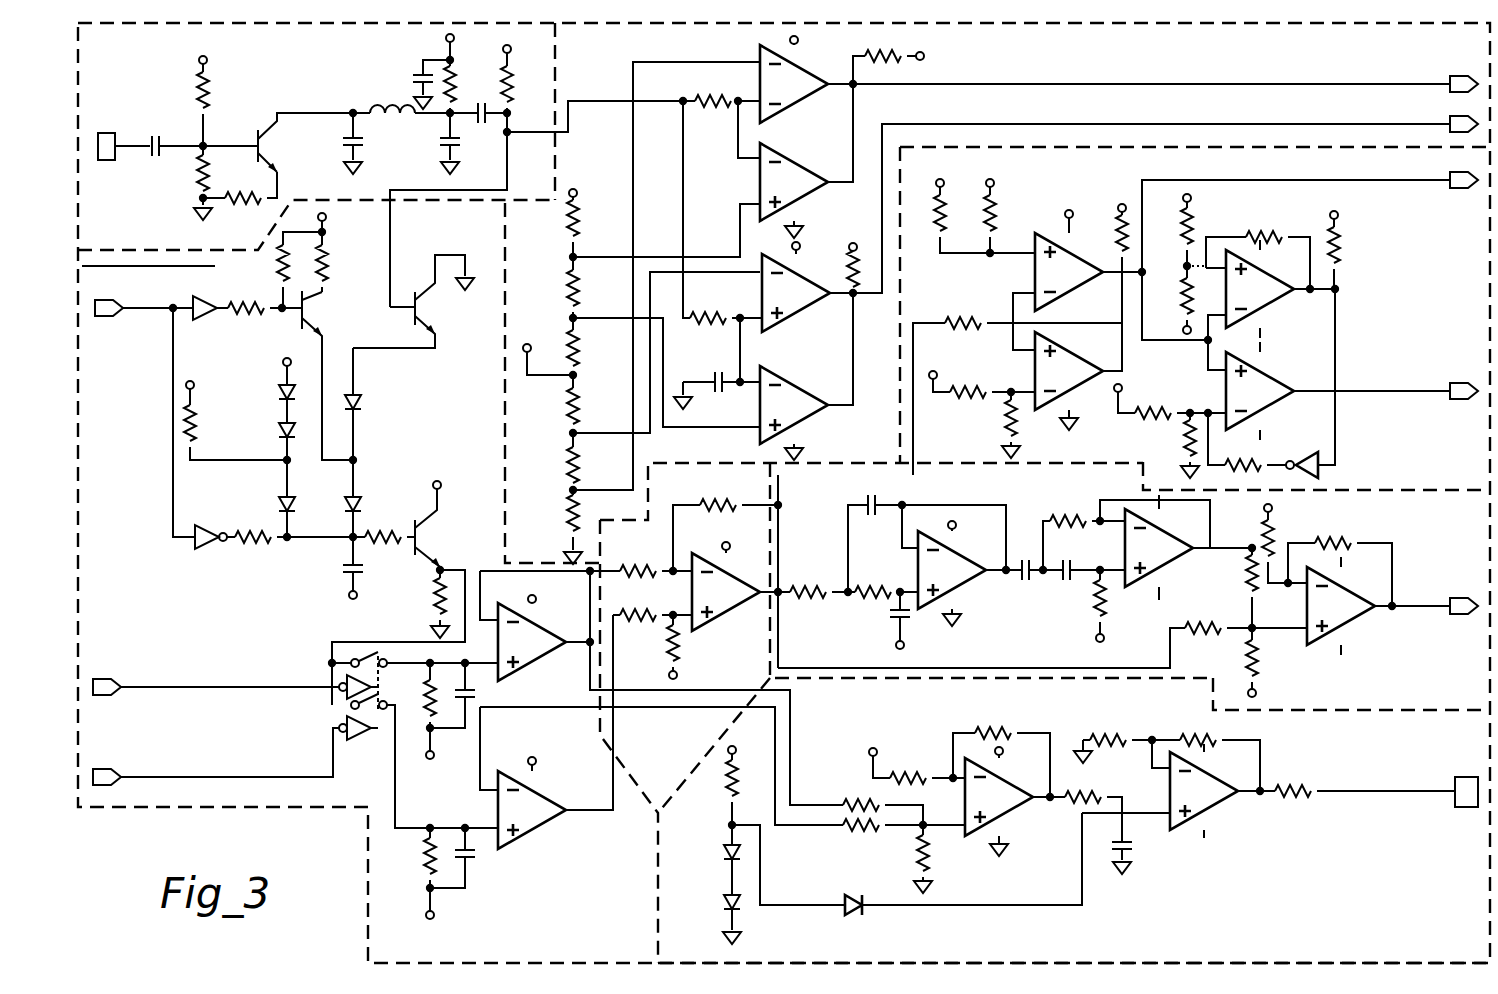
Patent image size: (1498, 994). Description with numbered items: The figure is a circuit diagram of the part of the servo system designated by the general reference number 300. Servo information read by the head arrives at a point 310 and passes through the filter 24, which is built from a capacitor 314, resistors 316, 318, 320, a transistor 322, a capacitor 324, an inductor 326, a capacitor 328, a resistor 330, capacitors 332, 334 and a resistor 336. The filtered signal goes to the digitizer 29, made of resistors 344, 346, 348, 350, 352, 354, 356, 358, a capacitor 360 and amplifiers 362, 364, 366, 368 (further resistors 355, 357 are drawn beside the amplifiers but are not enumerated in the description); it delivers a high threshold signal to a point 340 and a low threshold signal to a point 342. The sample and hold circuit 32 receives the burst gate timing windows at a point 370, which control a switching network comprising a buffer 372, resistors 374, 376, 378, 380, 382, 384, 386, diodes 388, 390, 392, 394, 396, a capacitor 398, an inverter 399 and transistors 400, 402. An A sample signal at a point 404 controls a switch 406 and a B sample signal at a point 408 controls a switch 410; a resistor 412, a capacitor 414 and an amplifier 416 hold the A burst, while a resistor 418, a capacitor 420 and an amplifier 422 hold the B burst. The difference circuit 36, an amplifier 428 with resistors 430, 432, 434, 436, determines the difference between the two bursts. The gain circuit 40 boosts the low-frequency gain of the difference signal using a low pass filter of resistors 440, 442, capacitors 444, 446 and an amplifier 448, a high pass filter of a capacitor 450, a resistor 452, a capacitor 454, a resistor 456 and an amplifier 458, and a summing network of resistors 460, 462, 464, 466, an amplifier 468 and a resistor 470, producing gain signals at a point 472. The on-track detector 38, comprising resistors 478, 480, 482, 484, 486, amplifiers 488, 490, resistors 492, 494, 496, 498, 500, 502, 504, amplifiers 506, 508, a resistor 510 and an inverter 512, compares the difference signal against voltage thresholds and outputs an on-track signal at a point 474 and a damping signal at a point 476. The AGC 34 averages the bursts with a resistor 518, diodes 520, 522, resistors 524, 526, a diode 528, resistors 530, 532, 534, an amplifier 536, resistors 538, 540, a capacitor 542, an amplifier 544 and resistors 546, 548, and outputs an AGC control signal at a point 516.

The filter 24 is at (154, 76).
The digitizer 29 is at (610, 73).
The sample and hold circuit 32 is at (477, 426).
The AGC 34 is at (1370, 886).
The difference circuit 36 is at (692, 493).
The on-track detector 38 is at (1442, 306).
The gain circuit 40 is at (1462, 556).
The general reference number 300 is at (187, 815).
The point 310 is at (118, 134).
The capacitor 314 is at (198, 132).
The resistor 316 is at (213, 86).
The resistor 318 is at (177, 183).
The resistor 320 is at (240, 183).
The transistor 322 is at (305, 142).
The capacitor 324 is at (372, 143).
The inductor 326 is at (401, 96).
The capacitor 328 is at (410, 75).
The resistor 330 is at (451, 73).
The capacitor 332 is at (452, 125).
The capacitor 334 is at (471, 142).
The resistor 336 is at (536, 165).
The point 340 is at (1368, 67).
The point 342 is at (1375, 113).
The resistor 344 is at (658, 214).
The resistor 346 is at (663, 342).
The resistor 348 is at (563, 353).
The resistor 350 is at (663, 359).
The resistor 352 is at (663, 278).
The resistor 354 is at (550, 529).
The pull-up resistor 355 is at (870, 276).
The resistor 356 is at (720, 114).
The pull-up resistor 357 is at (903, 56).
The resistor 358 is at (722, 243).
The capacitor 360 is at (707, 378).
The amplifier 362 is at (1105, 79).
The amplifier 364 is at (806, 161).
The amplifier 366 is at (1106, 231).
The amplifier 368 is at (809, 376).
The point 370 is at (140, 320).
The buffer 372 is at (203, 325).
The resistor 374 is at (203, 410).
The resistor 376 is at (297, 554).
The resistor 378 is at (295, 257).
The resistor 380 is at (339, 346).
The resistor 382 is at (390, 521).
The resistor 384 is at (415, 603).
The resistor 386 is at (265, 322).
The diode 388 is at (266, 381).
The diode 390 is at (260, 460).
The diode 392 is at (262, 514).
The diode 394 is at (332, 498).
The diode 396 is at (376, 406).
The capacitor 398 is at (331, 582).
The inverter 399 is at (186, 443).
The transistor 400 is at (413, 301).
The transistor 402 is at (407, 561).
The point 404 is at (214, 674).
The switch 406 is at (329, 696).
The point 408 is at (214, 756).
The switch 410 is at (359, 744).
The resistor 412 is at (414, 742).
The capacitor 414 is at (478, 695).
The amplifier 416 is at (537, 626).
The resistor 418 is at (412, 886).
The capacitor 420 is at (477, 858).
The amplifier 422 is at (546, 732).
The amplifier 428 is at (736, 604).
The resistor 430 is at (649, 647).
The resistor 432 is at (652, 602).
The resistor 434 is at (640, 589).
The resistor 436 is at (727, 521).
The resistor 440 is at (822, 578).
The resistor 442 is at (885, 578).
The capacitor 444 is at (927, 543).
The capacitor 446 is at (897, 629).
The amplifier 448 is at (962, 582).
The capacitor 450 is at (1029, 586).
The resistor 452 is at (1147, 529).
The capacitor 454 is at (1088, 558).
The resistor 456 is at (1118, 619).
The amplifier 458 is at (1169, 560).
The resistor 460 is at (1229, 587).
The resistor 462 is at (1042, 633).
The resistor 464 is at (1266, 542).
The resistor 466 is at (1279, 669).
The amplifier 468 is at (1351, 618).
The resistor 470 is at (1340, 557).
The point 472 is at (1453, 624).
The point 474 is at (1455, 405).
The point 476 is at (1455, 196).
The resistor 478 is at (975, 208).
The resistor 480 is at (1009, 204).
The resistor 482 is at (1017, 381).
The resistor 484 is at (976, 374).
The resistor 486 is at (986, 425).
The amplifier 488 is at (1079, 284).
The amplifier 490 is at (1079, 383).
The resistor 492 is at (1104, 229).
The resistor 494 is at (1161, 405).
The resistor 496 is at (1169, 445).
The resistor 498 is at (1247, 442).
The resistor 500 is at (1161, 310).
The resistor 502 is at (1188, 233).
The resistor 504 is at (1260, 249).
The amplifier 506 is at (1270, 301).
The amplifier 508 is at (1270, 403).
The resistor 510 is at (1351, 240).
The inverter 512 is at (1309, 383).
The point 516 is at (1455, 811).
The resistor 518 is at (763, 817).
The diode 520 is at (711, 870).
The diode 522 is at (710, 918).
The resistor 524 is at (756, 733).
The resistor 526 is at (722, 784).
The diode 528 is at (947, 864).
The resistor 530 is at (945, 859).
The resistor 532 is at (907, 756).
The resistor 534 is at (1001, 745).
The amplifier 536 is at (1009, 809).
The resistor 538 is at (1122, 737).
The resistor 540 is at (1117, 790).
The capacitor 542 is at (1147, 843).
The amplifier 544 is at (1214, 803).
The resistor 546 is at (1208, 752).
The resistor 548 is at (1365, 801).